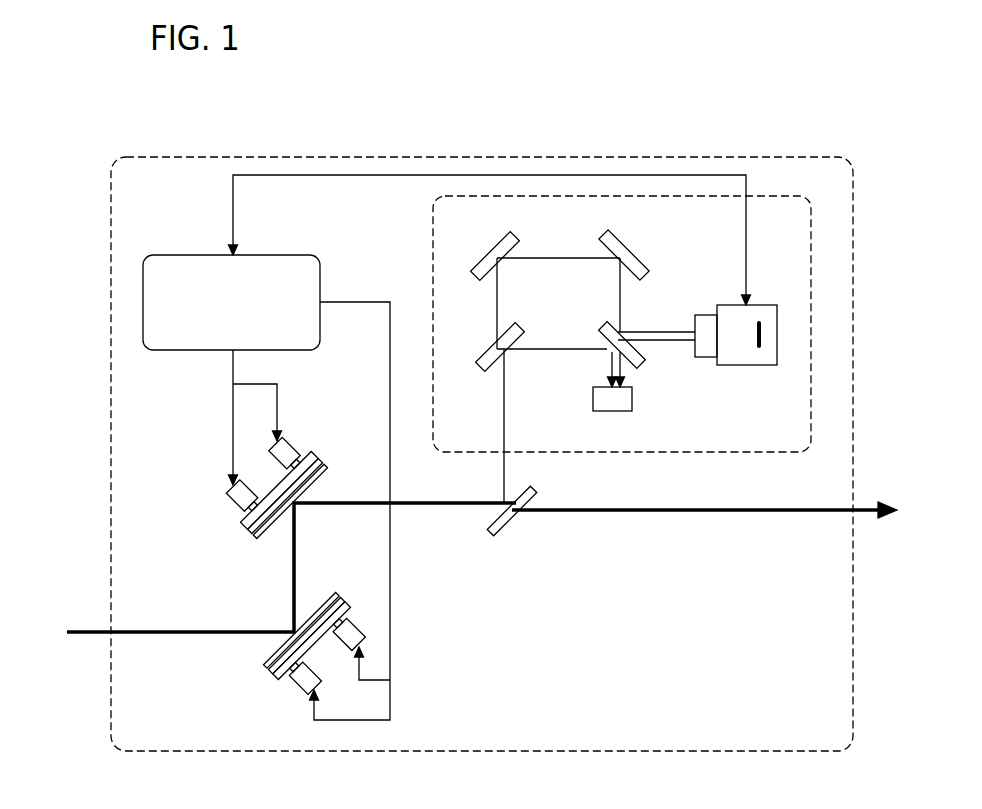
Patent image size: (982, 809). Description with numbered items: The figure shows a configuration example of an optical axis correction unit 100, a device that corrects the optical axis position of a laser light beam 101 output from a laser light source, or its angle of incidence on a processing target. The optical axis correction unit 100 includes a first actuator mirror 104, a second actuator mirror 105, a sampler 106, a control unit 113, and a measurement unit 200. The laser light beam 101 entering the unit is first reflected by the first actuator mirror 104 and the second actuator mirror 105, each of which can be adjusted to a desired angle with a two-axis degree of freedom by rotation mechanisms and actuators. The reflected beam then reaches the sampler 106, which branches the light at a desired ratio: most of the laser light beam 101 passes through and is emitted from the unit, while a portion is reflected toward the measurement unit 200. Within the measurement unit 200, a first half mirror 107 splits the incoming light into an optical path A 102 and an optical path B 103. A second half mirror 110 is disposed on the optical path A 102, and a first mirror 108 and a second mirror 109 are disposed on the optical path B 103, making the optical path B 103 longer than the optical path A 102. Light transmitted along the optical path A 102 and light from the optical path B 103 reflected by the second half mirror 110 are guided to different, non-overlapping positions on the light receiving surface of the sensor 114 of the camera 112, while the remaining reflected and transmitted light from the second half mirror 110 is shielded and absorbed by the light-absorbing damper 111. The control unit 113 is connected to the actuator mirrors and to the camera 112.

The optical axis correction unit 100 is at (524, 157).
The laser light beam 101 is at (80, 630).
The optical path A 102 is at (551, 349).
The optical path B 103 is at (551, 258).
The first actuator mirror 104 is at (272, 676).
The second actuator mirror 105 is at (243, 528).
The sampler 106 is at (503, 527).
The first half mirror 107 is at (494, 351).
The first mirror 108 is at (488, 248).
The second mirror 109 is at (631, 254).
The second half mirror 110 is at (645, 362).
The damper 111 is at (643, 402).
The camera 112 is at (758, 303).
The control unit 113 is at (200, 252).
The sensor 114 is at (762, 350).
The measurement unit 200 is at (722, 452).